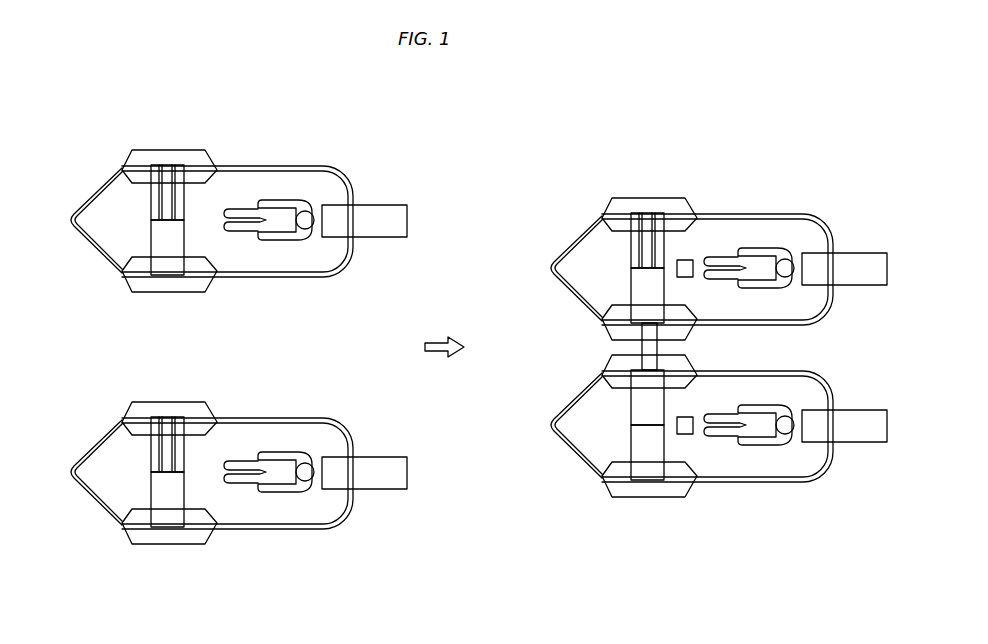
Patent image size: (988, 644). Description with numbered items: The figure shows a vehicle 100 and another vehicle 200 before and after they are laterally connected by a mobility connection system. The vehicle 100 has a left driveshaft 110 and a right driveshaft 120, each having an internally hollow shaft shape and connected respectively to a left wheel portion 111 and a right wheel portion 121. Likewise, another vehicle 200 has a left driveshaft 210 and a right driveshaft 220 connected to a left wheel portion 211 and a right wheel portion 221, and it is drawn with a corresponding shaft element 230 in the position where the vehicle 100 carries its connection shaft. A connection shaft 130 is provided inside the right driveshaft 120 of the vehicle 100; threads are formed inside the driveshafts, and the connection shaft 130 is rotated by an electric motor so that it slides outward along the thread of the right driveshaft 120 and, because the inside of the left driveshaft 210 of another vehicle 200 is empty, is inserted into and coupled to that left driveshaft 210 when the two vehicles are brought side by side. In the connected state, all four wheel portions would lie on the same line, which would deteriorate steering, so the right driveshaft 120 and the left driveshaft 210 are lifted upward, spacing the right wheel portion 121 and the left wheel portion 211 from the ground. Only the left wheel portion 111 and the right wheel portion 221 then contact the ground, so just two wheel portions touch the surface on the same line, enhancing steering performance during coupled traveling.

The vehicle 100 is at (294, 540).
The left driveshaft 110 is at (157, 489).
The left wheel portion 111 is at (138, 530).
The right driveshaft 120 is at (150, 457).
The right wheel portion 121 is at (138, 415).
The connection shaft 130 is at (168, 430).
The another vehicle 200 is at (294, 156).
The left driveshaft of another vehicle 210 is at (157, 237).
The left wheel portion of another vehicle 211 is at (138, 278).
The right driveshaft of another vehicle 220 is at (150, 205).
The right wheel portion of another vehicle 221 is at (138, 163).
The connecting rail 230 is at (168, 178).